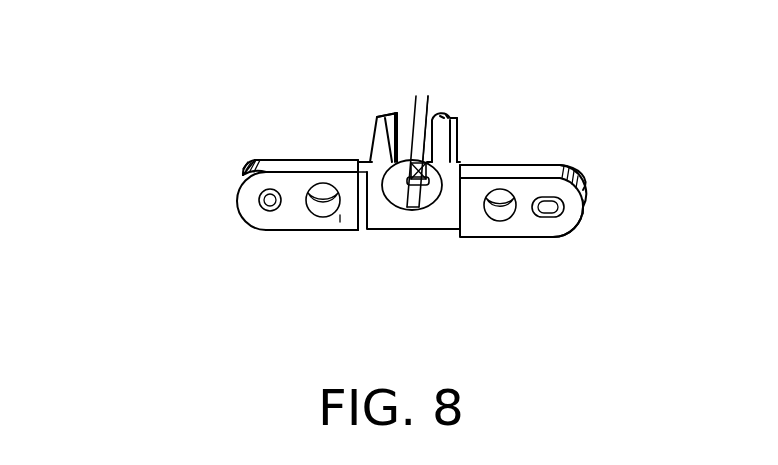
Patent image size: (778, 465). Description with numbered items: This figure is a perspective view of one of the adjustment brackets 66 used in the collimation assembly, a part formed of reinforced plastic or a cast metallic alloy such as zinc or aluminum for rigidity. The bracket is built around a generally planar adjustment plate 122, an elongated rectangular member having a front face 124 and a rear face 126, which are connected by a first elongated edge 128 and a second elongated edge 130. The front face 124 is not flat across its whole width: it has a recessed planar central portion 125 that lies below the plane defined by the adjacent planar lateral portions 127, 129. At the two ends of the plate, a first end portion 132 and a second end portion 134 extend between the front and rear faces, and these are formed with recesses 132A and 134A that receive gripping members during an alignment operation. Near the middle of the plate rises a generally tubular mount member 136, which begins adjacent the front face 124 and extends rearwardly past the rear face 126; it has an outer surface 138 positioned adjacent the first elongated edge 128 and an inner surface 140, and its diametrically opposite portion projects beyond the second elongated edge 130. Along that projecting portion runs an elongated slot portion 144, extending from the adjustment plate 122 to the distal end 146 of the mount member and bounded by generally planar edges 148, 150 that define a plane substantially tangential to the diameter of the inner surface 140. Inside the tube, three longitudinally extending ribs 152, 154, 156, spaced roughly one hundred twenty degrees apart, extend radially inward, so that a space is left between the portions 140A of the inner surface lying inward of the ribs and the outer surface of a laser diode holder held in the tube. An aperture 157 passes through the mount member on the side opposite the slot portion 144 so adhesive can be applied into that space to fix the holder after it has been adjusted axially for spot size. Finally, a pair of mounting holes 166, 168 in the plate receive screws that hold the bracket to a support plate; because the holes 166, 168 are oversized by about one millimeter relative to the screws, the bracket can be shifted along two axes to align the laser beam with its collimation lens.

The adjustment bracket 66 is at (616, 118).
The adjustment plate 122 is at (574, 160).
The front face 124 is at (540, 240).
The recessed planar central portion 125 is at (340, 218).
The rear face 126 is at (556, 144).
The planar lateral portion 127 is at (570, 228).
The first elongated edge 128 is at (268, 231).
The planar lateral portion 129 is at (273, 182).
The second elongated edge 130 is at (283, 177).
The first end portion 132 is at (582, 180).
The recess 132A is at (560, 205).
The second end portion 134 is at (268, 201).
The recess 134A is at (258, 203).
The mount member 136 is at (368, 110).
The outer surface 138 is at (462, 133).
The inner surface 140 is at (413, 110).
The inner surface portion 140A is at (425, 186).
The slot portion 144 is at (426, 105).
The distal end 146 is at (395, 113).
The planar edge 148 is at (447, 115).
The planar edge 150 is at (385, 170).
The rib 152 is at (412, 210).
The rib 154 is at (370, 207).
The rib 156 is at (432, 182).
The aperture 157 is at (433, 120).
The mounting hole 166 is at (500, 221).
The mounting hole 168 is at (322, 214).